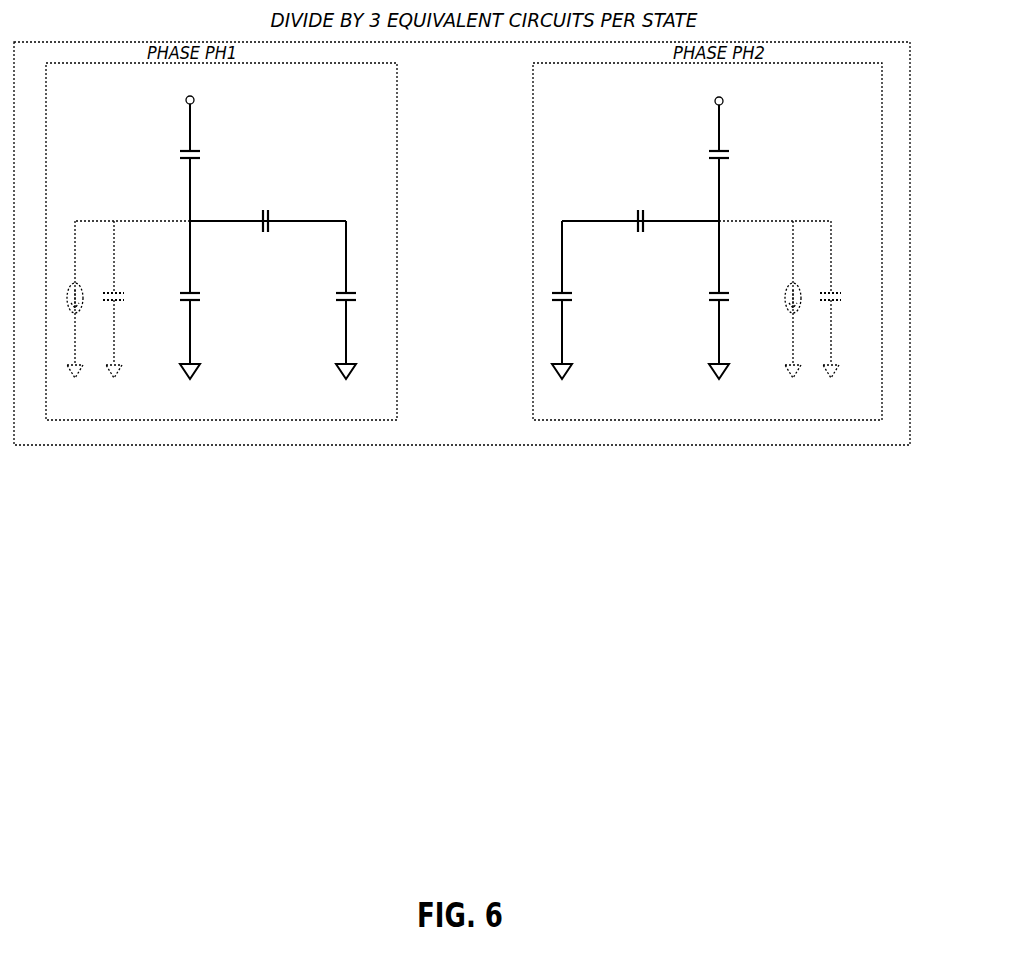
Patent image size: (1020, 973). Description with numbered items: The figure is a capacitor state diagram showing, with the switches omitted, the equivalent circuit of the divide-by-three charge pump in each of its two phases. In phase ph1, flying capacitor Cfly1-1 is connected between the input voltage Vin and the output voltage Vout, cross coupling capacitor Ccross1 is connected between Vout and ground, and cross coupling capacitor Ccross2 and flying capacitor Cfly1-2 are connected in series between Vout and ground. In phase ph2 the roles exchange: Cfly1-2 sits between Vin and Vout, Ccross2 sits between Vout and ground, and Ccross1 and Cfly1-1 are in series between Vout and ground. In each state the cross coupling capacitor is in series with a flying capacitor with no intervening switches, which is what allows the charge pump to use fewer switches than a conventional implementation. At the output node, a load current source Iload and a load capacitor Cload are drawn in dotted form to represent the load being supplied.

The input voltage Vin is at (451, 90).
The output voltage Vout is at (453, 209).
The flying capacitor Cfly1-1 is at (402, 226).
The flying capacitor Cfly1-2 is at (531, 226).
The cross coupling capacitor Ccross1 is at (423, 248).
The cross coupling capacitor Ccross2 is at (483, 248).
The load current source Iload is at (414, 292).
The load capacitor Cload is at (491, 292).